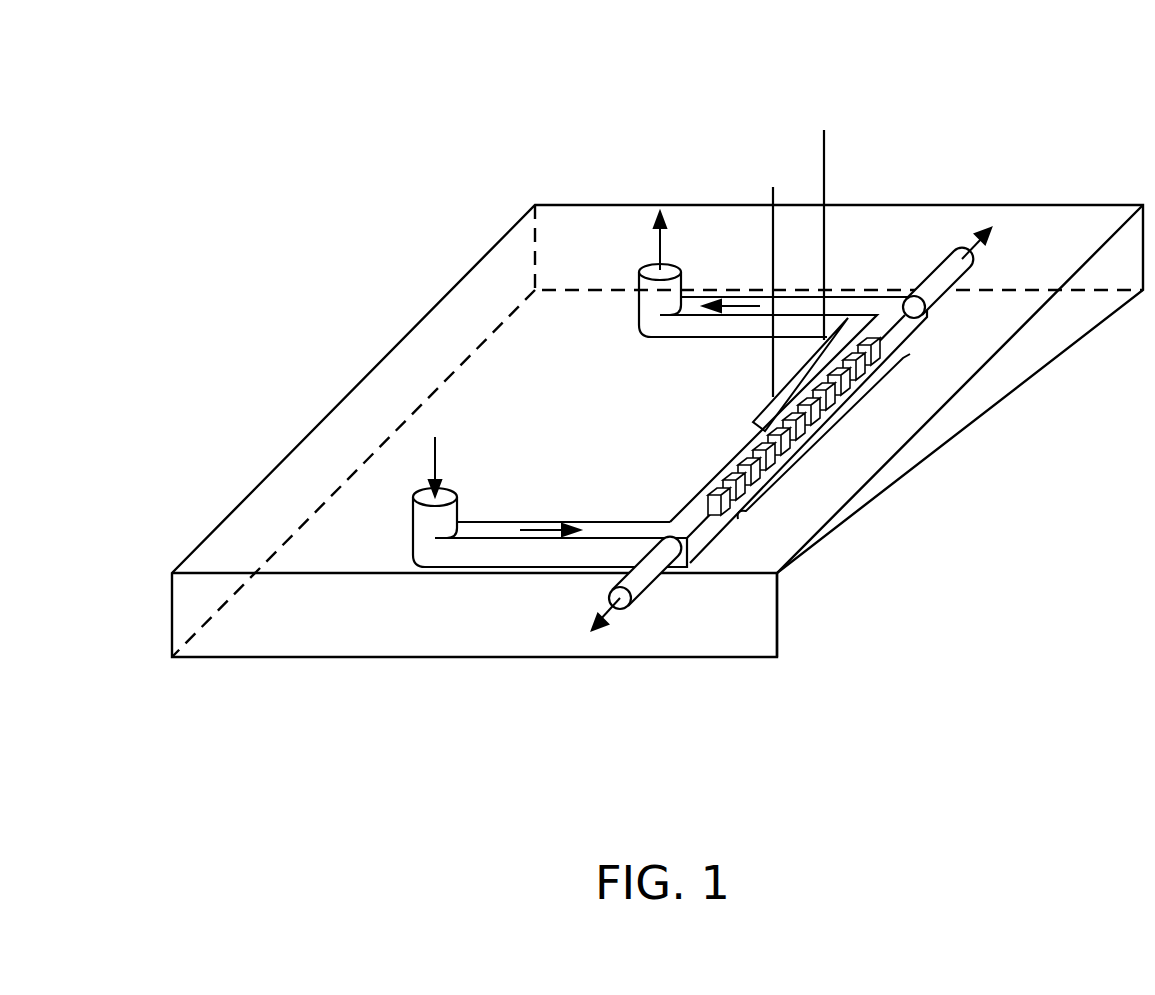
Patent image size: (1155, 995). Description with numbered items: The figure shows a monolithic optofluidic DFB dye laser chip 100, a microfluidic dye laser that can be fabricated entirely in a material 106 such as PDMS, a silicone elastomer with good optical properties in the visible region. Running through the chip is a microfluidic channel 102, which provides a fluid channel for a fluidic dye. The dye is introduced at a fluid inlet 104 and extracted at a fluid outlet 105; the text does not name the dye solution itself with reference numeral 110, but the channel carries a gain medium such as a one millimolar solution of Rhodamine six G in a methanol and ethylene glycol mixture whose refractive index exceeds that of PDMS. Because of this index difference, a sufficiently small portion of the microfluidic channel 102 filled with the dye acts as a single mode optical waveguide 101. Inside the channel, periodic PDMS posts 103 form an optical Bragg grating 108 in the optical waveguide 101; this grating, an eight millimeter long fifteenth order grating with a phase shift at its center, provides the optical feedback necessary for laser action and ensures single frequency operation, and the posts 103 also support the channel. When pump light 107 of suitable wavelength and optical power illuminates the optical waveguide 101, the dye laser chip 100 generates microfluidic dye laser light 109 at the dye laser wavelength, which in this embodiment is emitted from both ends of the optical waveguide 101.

The monolithic optofluidic DFB dye laser chip 100 is at (1142, 145).
The optical waveguide 101 is at (905, 340).
The microfluidic channel 102 is at (614, 522).
The PDMS posts 103 is at (723, 480).
The fluid inlet 104 is at (486, 491).
The fluid outlet 105 is at (647, 265).
The material 106 is at (440, 362).
The pump light 107 is at (805, 190).
The optical Bragg grating 108 is at (842, 420).
The microfluidic dye laser light 109 is at (647, 583).
The dye solution 110 is at (442, 553).